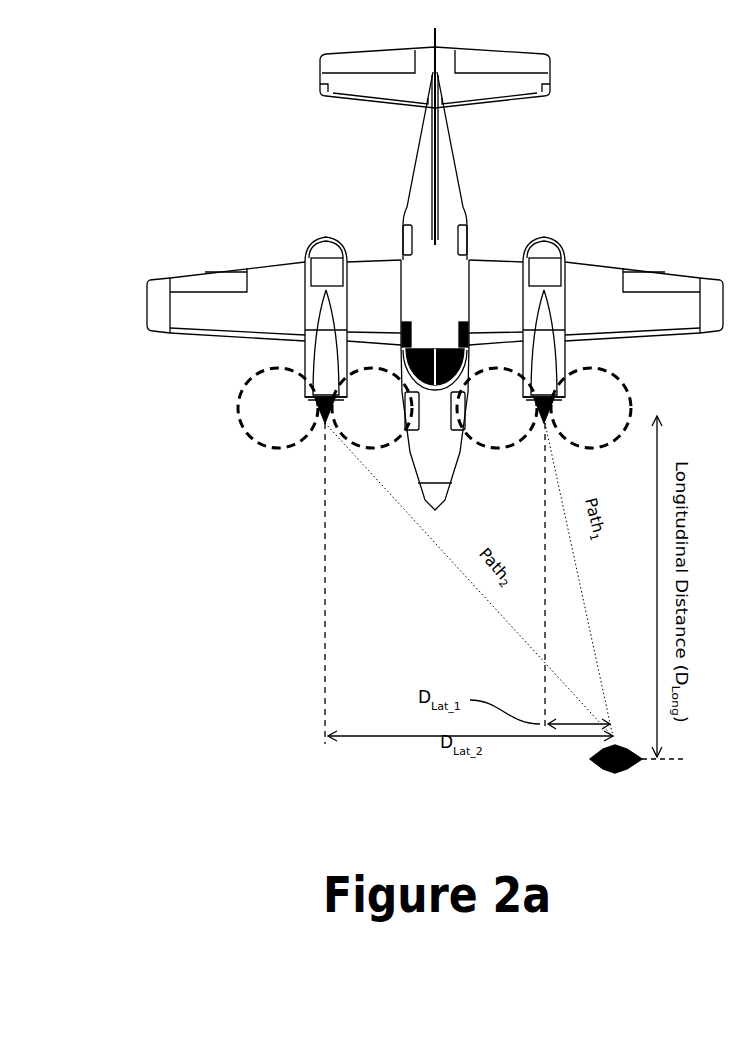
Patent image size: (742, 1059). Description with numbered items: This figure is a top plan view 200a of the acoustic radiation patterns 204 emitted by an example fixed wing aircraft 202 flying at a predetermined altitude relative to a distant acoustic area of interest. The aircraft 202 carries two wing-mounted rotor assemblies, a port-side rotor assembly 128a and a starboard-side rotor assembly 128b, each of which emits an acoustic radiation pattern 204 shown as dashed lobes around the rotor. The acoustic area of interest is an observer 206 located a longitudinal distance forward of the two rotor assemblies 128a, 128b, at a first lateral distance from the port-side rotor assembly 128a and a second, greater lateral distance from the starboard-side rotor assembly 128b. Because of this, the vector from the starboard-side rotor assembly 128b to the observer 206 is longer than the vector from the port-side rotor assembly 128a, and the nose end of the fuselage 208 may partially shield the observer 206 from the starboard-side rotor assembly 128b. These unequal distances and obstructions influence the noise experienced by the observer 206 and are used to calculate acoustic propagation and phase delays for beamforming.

The top plan view 200a is at (669, 56).
The fixed wing aircraft 202 is at (256, 173).
The acoustic radiation patterns 204 is at (234, 404).
The observer 206 is at (590, 758).
The fuselage 208 is at (467, 205).
The port-side rotor assembly 128a is at (566, 364).
The starboard-side rotor assembly 128b is at (305, 374).